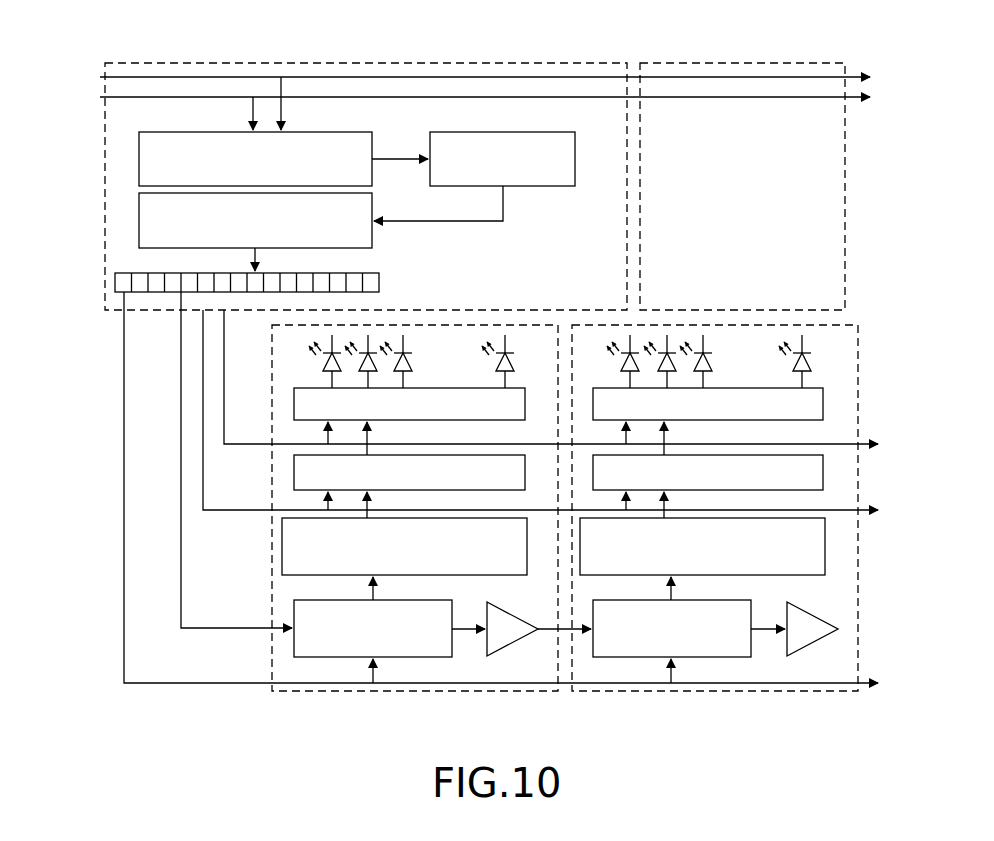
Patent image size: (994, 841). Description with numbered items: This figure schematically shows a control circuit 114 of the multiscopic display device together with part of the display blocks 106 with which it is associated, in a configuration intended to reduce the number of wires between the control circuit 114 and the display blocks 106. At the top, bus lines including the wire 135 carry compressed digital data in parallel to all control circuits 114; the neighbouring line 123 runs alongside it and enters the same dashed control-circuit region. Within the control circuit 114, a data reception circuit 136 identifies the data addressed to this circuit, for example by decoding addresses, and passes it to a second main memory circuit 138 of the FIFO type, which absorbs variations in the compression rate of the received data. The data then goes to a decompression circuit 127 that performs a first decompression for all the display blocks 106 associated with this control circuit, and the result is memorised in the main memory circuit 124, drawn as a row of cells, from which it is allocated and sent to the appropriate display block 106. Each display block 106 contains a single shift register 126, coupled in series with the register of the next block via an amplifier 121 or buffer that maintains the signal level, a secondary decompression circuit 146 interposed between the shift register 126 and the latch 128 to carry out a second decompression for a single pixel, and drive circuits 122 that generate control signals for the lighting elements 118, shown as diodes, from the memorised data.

The display block 106 is at (288, 693).
The control circuit 114 is at (577, 62).
The lighting elements 118 is at (412, 360).
The amplifier 121 is at (502, 640).
The drive circuits 122 is at (300, 411).
The data bus line 123 is at (136, 76).
The main memory circuit 124 is at (118, 284).
The shift register 126 is at (422, 652).
The decompression circuit 127 is at (142, 218).
The latch 128 is at (297, 463).
The wire 135 is at (214, 96).
The data reception circuit 136 is at (142, 158).
The second main memory circuit 138 is at (478, 131).
The secondary decompression circuit 146 is at (290, 548).